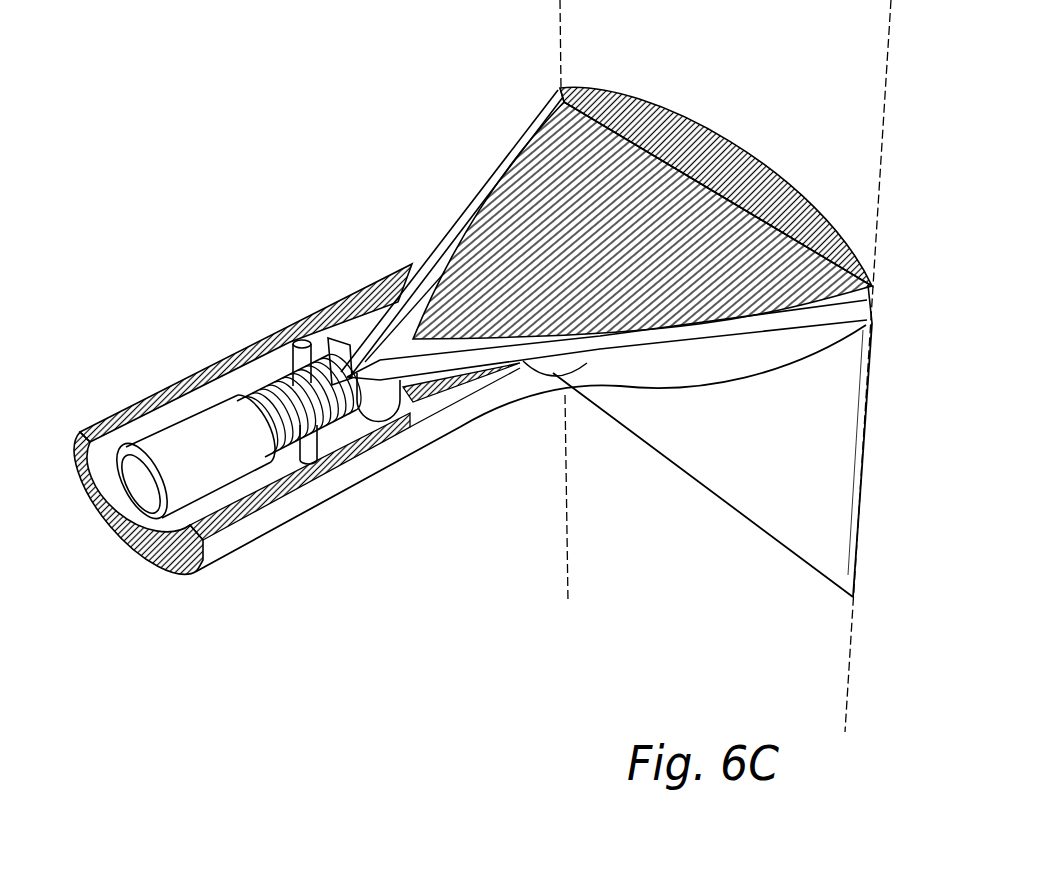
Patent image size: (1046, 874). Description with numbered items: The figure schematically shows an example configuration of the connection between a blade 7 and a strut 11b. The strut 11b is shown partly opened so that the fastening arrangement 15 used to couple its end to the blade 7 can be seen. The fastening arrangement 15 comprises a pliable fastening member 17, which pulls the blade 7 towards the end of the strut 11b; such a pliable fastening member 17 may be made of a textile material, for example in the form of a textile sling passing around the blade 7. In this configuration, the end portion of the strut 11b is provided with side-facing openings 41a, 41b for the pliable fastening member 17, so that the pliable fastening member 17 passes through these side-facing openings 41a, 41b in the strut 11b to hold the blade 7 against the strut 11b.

The blade 7 is at (837, 178).
The strut 11b is at (488, 413).
The fastening arrangement 15 is at (326, 336).
The pliable fastening member 17 is at (613, 345).
The side-facing opening 41a is at (424, 266).
The side-facing opening 41b is at (550, 368).